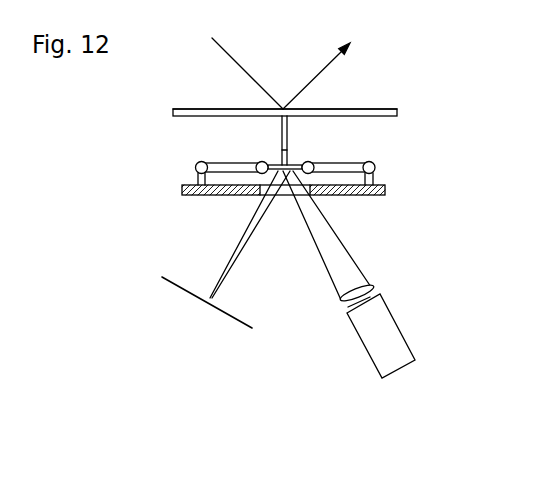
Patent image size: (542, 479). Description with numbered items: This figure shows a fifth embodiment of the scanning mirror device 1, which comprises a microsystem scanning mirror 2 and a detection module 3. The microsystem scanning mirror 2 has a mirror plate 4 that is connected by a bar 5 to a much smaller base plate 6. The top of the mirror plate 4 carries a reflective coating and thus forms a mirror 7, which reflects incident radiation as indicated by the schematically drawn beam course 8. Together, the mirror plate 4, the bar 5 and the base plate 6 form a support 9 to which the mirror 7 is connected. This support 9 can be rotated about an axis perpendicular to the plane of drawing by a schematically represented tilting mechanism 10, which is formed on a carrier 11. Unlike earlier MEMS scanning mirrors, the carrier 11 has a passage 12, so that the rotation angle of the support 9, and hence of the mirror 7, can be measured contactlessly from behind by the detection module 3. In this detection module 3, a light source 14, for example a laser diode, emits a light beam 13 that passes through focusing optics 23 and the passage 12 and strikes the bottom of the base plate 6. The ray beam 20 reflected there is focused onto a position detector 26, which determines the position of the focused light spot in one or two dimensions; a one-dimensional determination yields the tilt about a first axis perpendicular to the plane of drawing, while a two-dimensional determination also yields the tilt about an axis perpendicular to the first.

The scanning mirror device 1 is at (391, 78).
The microsystem scanning mirror 2 is at (160, 139).
The detection module 3 is at (421, 255).
The mirror plate 4 is at (397, 110).
The bar 5 is at (281, 148).
The base plate 6 is at (296, 166).
The mirror 7 is at (184, 110).
The beam course 8 is at (231, 59).
The support 9 is at (296, 139).
The tilting mechanism 10 is at (198, 162).
The carrier 11 is at (385, 190).
The passage 12 is at (257, 192).
The light beam 13 is at (344, 245).
The light source 14 is at (412, 347).
The reflected light beam 20 is at (243, 241).
The focusing optics 23 is at (345, 305).
The position detector 26 is at (198, 297).